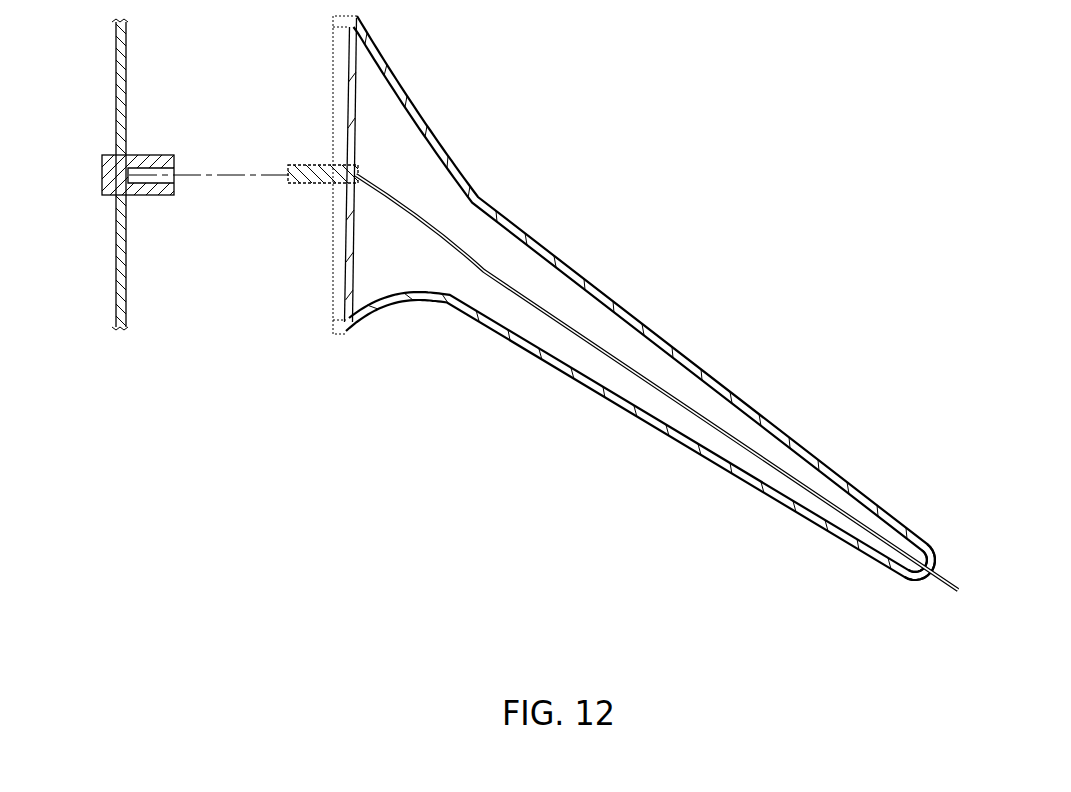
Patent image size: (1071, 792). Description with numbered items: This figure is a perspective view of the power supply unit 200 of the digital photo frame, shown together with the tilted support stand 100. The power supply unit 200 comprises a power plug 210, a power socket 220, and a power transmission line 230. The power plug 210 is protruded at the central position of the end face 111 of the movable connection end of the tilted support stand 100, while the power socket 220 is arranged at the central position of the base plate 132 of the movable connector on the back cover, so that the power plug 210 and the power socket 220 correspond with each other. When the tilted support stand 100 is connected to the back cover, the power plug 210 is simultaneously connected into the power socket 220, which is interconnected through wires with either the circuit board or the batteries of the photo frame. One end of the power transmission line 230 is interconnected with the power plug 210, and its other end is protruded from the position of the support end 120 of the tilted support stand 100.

The tilted support stand 100 is at (433, 147).
The end face 111 is at (348, 72).
The support end 120 is at (912, 575).
The base plate 132 is at (117, 56).
The power supply unit 200 is at (653, 380).
The power plug 210 is at (308, 170).
The power socket 220 is at (167, 166).
The power transmission line 230 is at (721, 430).